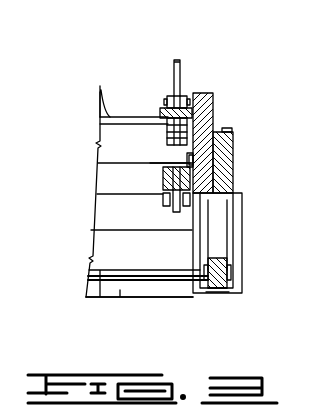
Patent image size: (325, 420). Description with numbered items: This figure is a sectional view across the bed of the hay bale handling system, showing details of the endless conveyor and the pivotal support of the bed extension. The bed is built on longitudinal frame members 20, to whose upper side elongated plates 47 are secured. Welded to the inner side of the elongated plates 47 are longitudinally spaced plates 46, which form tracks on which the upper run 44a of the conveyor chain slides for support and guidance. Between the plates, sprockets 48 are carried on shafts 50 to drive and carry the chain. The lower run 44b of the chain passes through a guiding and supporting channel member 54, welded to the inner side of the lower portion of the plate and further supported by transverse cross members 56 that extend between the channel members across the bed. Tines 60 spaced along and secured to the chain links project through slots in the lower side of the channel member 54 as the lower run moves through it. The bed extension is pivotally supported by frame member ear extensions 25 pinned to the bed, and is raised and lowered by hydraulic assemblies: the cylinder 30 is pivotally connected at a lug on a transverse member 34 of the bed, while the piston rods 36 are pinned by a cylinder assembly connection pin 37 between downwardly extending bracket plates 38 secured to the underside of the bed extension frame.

The frame members 20 is at (242, 246).
The frame member ear extensions 25 is at (235, 134).
The cylinder 30 is at (208, 293).
The transverse member 34 is at (120, 297).
The piston rods 36 is at (233, 268).
The cylinder assembly connection pin 37 is at (95, 283).
The bracket plates 38 is at (240, 220).
The upper run 44a is at (172, 108).
The lower run 44b is at (176, 167).
The plates 46 is at (165, 108).
The elongated plates 47 is at (208, 95).
The sprockets 48 is at (166, 131).
The shafts 50 is at (100, 95).
The channel member 54 is at (163, 183).
The transverse cross members 56 is at (100, 184).
The tines 60 is at (178, 62).